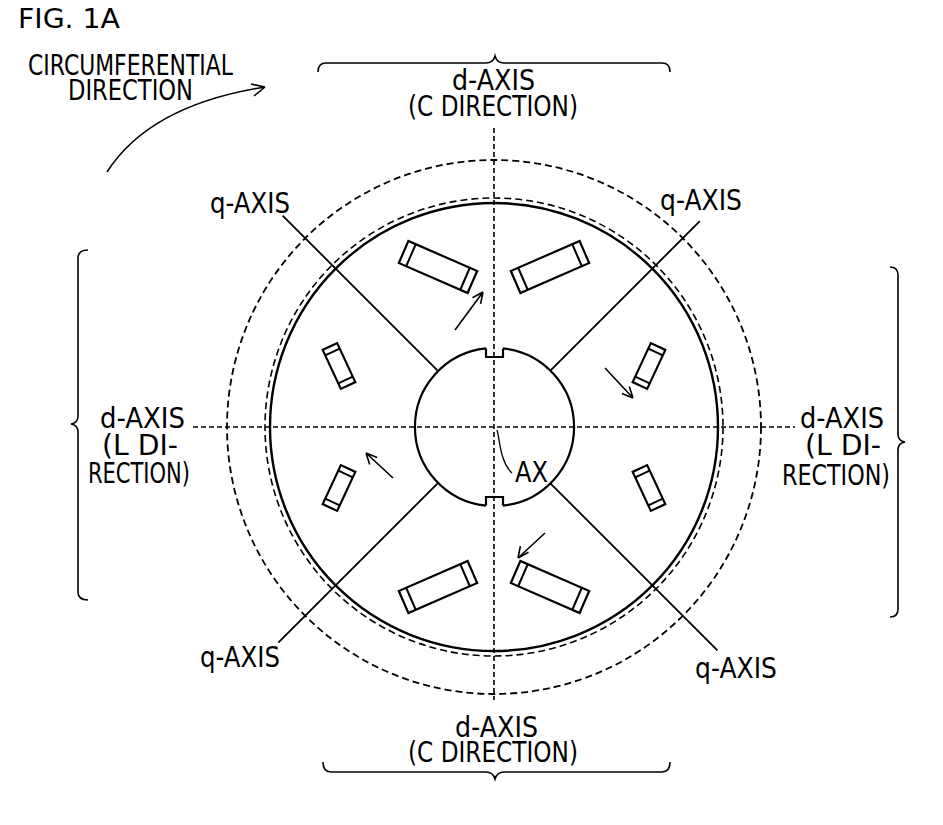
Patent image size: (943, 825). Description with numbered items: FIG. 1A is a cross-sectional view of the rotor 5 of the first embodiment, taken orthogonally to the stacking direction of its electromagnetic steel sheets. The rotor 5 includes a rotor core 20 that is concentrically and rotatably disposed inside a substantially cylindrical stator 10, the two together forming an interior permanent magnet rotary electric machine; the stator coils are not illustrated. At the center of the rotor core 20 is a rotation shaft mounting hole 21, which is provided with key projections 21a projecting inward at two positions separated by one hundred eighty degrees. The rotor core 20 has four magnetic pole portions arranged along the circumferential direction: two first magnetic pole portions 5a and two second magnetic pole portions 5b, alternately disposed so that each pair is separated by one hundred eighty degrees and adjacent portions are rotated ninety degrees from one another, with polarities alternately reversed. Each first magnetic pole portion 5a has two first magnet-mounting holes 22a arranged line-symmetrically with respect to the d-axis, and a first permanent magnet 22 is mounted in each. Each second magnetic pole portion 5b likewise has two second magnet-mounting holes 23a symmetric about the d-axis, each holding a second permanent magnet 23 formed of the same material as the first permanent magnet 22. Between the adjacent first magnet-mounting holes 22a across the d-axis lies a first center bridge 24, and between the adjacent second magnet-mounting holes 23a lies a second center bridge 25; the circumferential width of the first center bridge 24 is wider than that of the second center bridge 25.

The rotor 5 is at (870, 737).
The first magnetic pole portion 5a is at (491, 433).
The second magnetic pole portion 5b is at (494, 421).
The stator 10 is at (722, 280).
The rotor core 20 is at (748, 488).
The rotation shaft mounting hole 21 is at (571, 443).
The key projection 21a is at (503, 352).
The first permanent magnet 22 is at (325, 380).
The first magnet-mounting hole 22a is at (332, 350).
The second permanent magnet 23 is at (440, 257).
The second magnet-mounting hole 23a is at (398, 255).
The first center bridge 24 is at (499, 431).
The second center bridge 25 is at (502, 425).